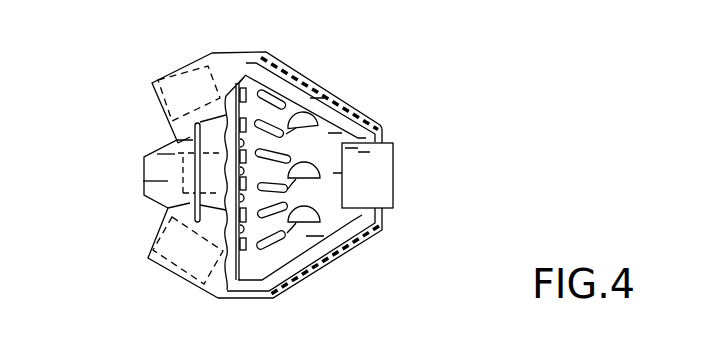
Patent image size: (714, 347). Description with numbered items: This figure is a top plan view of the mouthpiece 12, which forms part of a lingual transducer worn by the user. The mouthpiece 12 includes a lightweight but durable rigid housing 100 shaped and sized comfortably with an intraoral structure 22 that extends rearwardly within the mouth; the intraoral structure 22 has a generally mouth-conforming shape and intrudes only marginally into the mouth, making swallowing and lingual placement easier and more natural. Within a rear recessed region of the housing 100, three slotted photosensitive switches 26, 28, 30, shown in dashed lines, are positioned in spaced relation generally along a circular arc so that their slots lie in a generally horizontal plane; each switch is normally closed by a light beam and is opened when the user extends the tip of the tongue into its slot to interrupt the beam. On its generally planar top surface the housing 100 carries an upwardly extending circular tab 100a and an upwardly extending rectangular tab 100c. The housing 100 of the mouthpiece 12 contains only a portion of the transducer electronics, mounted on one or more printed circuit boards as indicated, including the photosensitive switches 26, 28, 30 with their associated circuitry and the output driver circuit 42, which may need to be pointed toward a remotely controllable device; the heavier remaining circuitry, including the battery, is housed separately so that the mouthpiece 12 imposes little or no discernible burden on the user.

The mouthpiece 12 is at (390, 70).
The intraoral structure 22 is at (147, 76).
The photosensitive slotted switch 26 is at (159, 76).
The photosensitive slotted switch 28 is at (153, 148).
The photosensitive slotted switch 30 is at (158, 266).
The output driver circuit 42 is at (393, 200).
The housing 100 is at (297, 68).
The circular tab 100a is at (168, 210).
The rectangular tab 100c is at (140, 182).